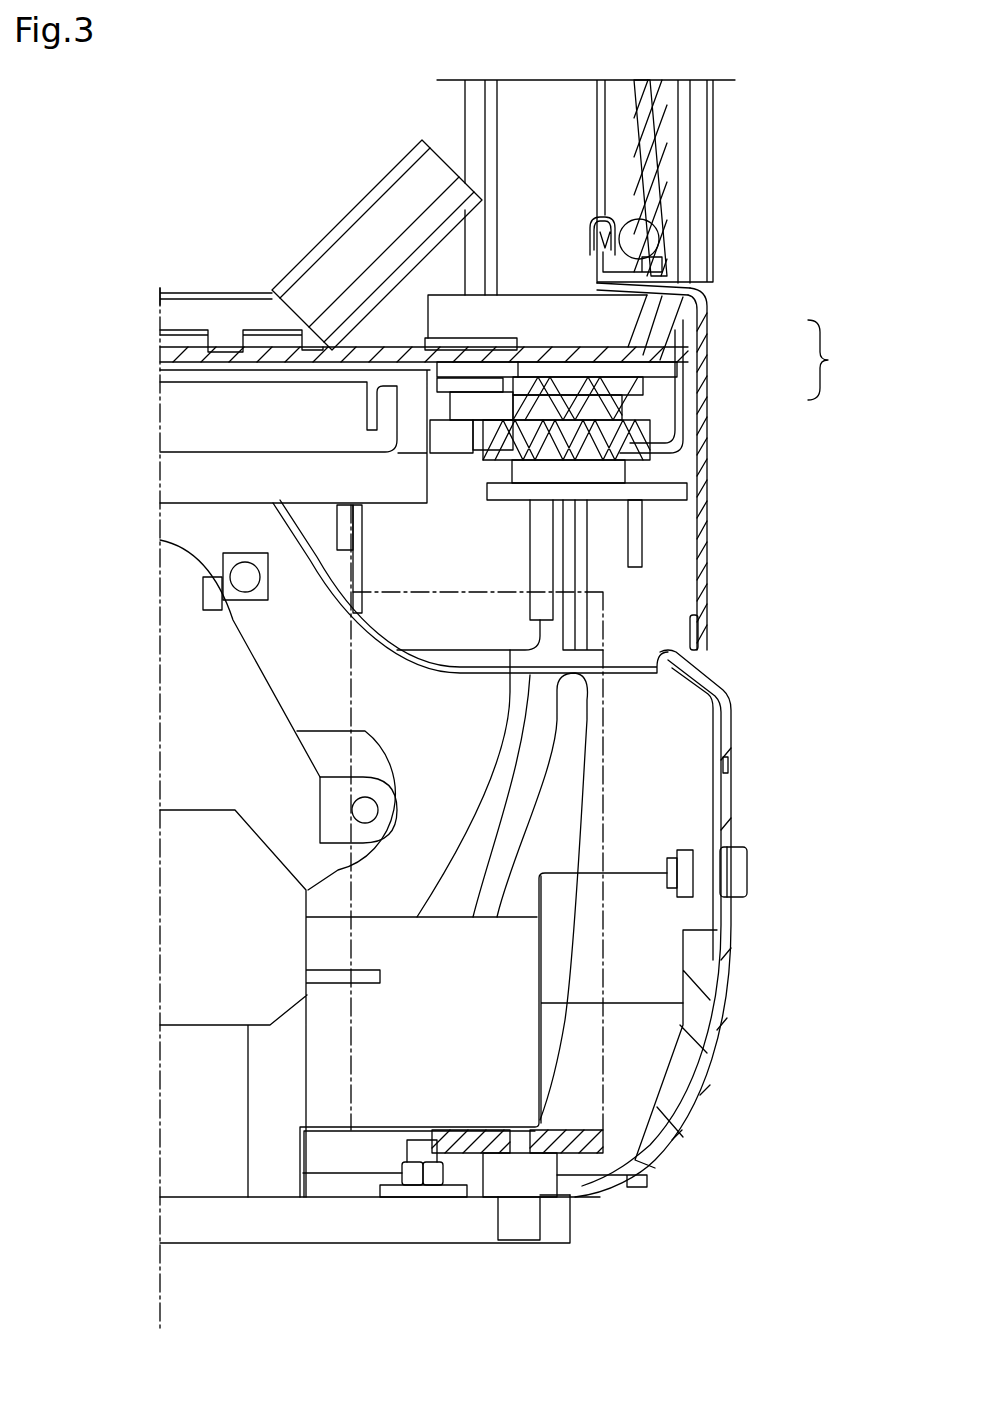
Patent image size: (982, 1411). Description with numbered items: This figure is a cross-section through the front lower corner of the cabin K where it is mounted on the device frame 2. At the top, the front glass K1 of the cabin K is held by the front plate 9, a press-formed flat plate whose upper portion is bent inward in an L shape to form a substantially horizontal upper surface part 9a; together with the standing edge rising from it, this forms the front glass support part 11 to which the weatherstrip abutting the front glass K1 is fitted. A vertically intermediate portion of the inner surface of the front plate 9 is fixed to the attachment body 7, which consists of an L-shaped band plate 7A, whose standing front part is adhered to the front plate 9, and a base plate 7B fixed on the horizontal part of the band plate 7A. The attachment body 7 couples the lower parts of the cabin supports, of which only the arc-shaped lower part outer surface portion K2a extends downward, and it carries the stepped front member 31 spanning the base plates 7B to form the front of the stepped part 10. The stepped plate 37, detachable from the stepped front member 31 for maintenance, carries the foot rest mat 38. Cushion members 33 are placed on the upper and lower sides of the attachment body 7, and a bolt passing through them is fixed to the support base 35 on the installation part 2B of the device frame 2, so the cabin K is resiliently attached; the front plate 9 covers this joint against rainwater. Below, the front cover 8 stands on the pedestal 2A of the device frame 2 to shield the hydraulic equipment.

The cabin K is at (712, 118).
The front glass K1 is at (667, 173).
The upper surface part 9a is at (625, 278).
The front glass support part 11 is at (687, 275).
The front plate 9 is at (702, 317).
The base plate 7B is at (647, 430).
The attachment body 7 is at (828, 360).
The band plate 7A is at (670, 453).
The installation part 2B is at (672, 502).
The lower part outer surface portion K2a is at (703, 492).
The support base 35 is at (633, 493).
The cushion member 33 is at (540, 402).
The foot rest mat 38 is at (215, 360).
The stepped plate 37 is at (250, 373).
The stepped part 10 is at (457, 360).
The stepped front member 31 is at (547, 355).
The front cover 8 is at (728, 777).
The pedestal 2A is at (279, 1228).
The device frame 2 is at (343, 1245).